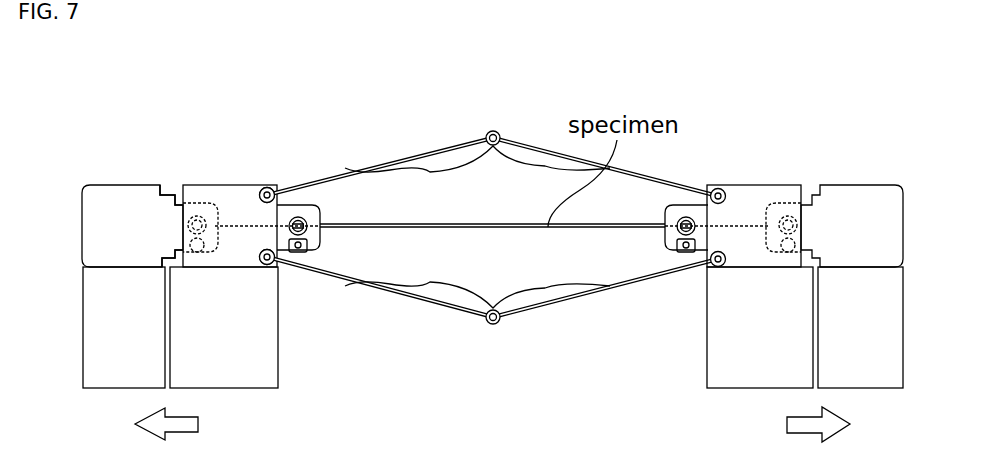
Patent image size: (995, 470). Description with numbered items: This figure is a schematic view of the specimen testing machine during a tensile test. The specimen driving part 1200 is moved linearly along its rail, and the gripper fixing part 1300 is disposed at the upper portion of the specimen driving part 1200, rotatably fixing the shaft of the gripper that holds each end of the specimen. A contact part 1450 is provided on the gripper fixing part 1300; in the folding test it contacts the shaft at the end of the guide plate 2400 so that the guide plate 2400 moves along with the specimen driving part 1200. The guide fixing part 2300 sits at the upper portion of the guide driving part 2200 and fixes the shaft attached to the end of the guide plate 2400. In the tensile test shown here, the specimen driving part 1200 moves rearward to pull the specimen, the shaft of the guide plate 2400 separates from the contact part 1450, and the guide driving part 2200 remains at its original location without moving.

The specimen driving part 1200 is at (113, 327).
The gripper fixing part 1300 is at (97, 197).
The contact part 1450 is at (168, 192).
The guide driving part 2200 is at (260, 332).
The guide fixing part 2300 is at (252, 193).
The guide plate 2400 is at (358, 167).